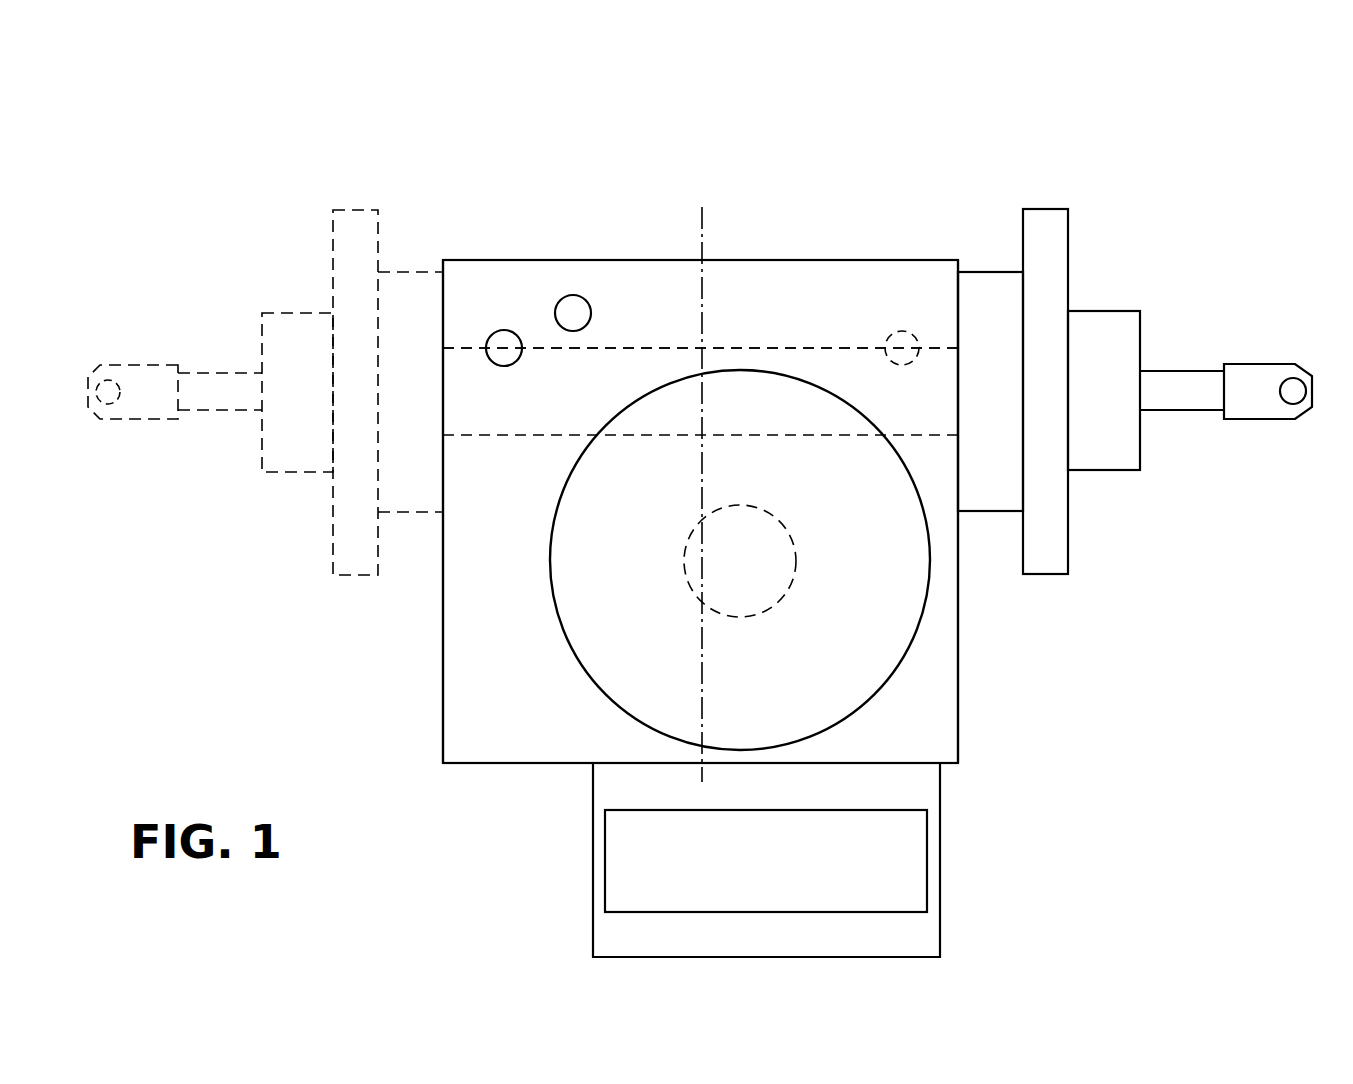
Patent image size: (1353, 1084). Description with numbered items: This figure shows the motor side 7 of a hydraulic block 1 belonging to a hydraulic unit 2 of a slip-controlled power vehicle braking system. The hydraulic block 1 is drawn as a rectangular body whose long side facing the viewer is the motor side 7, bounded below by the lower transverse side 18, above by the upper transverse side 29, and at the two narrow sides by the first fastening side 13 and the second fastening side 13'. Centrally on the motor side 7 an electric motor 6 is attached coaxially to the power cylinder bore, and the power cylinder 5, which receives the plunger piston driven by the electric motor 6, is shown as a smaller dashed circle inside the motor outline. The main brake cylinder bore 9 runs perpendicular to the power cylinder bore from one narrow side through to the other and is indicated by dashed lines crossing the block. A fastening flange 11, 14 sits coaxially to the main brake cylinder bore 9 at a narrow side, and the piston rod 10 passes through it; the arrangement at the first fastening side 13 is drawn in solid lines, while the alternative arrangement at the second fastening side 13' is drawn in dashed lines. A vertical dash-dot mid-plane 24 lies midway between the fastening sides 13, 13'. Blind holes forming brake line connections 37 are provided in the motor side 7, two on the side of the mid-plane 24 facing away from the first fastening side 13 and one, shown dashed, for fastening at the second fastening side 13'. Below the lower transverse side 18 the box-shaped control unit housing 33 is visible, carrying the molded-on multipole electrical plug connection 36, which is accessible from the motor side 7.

The hydraulic block 1 is at (648, 282).
The hydraulic unit 2 is at (508, 152).
The power cylinder 5 is at (777, 604).
The electric motor 6 is at (890, 682).
The motor side 7 is at (494, 657).
The main brake cylinder bore 9 is at (777, 348).
The piston rod 10 is at (218, 385).
The fastening flange 11 is at (713, 340).
The first fastening side 13 is at (1014, 511).
The second fastening side 13' is at (387, 511).
The fastening flange 14 is at (357, 230).
The lower transverse side 18 is at (513, 766).
The mid-plane 24 is at (702, 223).
The upper transverse side 29 is at (840, 260).
The control unit housing 33 is at (909, 782).
The electrical plug connection 36 is at (901, 865).
The brake line connections 37 is at (503, 330).